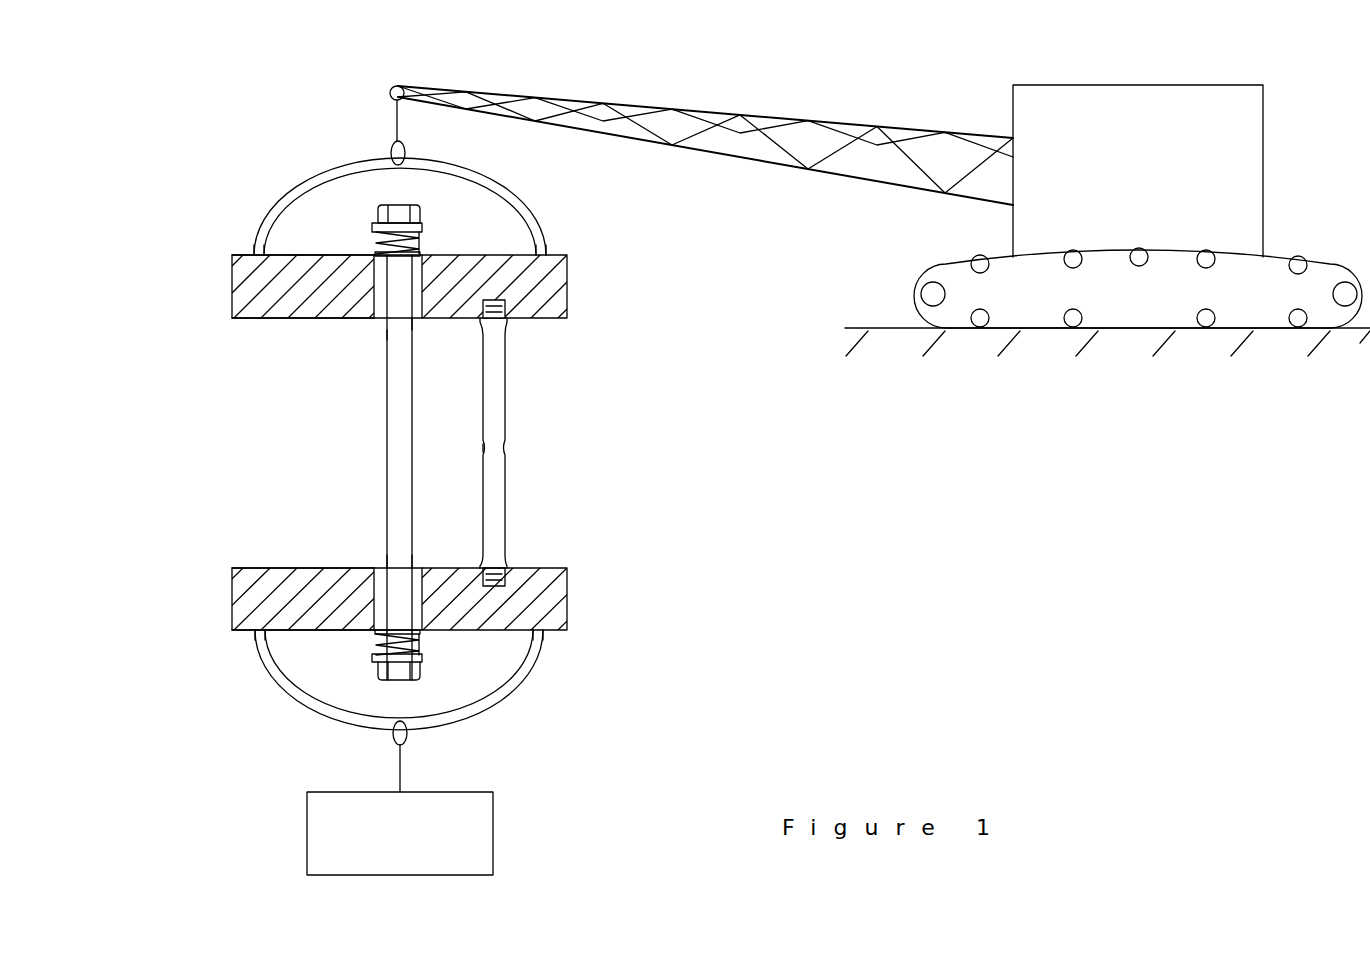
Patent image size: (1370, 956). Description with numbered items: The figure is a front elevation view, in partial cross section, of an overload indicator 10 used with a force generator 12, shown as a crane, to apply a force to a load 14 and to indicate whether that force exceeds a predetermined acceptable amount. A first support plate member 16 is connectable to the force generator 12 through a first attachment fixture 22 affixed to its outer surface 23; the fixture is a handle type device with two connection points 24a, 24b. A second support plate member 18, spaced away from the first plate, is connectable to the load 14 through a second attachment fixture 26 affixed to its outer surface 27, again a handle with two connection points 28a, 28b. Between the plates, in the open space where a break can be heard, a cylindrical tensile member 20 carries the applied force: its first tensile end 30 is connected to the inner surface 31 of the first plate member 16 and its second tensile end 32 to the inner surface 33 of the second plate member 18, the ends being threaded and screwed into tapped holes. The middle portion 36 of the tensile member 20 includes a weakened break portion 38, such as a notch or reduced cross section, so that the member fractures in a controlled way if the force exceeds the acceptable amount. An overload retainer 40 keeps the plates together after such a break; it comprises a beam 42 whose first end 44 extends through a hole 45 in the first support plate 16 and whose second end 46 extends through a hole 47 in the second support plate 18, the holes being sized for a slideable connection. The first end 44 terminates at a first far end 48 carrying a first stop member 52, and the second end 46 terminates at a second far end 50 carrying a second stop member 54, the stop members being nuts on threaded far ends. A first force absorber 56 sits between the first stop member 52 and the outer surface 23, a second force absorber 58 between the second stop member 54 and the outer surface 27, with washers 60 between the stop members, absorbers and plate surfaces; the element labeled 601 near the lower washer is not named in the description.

The overload indicator 10 is at (242, 98).
The force generator 12 is at (1103, 85).
The load 14 is at (493, 838).
The first support plate member 16 is at (226, 283).
The second support plate member 18 is at (226, 590).
The tensile member 20 is at (592, 410).
The first attachment fixture 22 is at (525, 195).
The outer surface 23 is at (240, 255).
The connection point 24a is at (258, 240).
The connection point 24b is at (540, 245).
The second attachment fixture 26 is at (525, 690).
The outer surface 27 is at (236, 632).
The connection point 28a is at (262, 650).
The connection point 28b is at (540, 650).
The first tensile end 30 is at (505, 306).
The inner surface 31 is at (236, 320).
The second tensile end 32 is at (520, 575).
The inner surface 33 is at (240, 568).
The middle portion 36 is at (505, 390).
The break portion 38 is at (505, 447).
The overload retainer 40 is at (296, 446).
The beam 42 is at (407, 420).
The first end 44 is at (403, 330).
The hole 45 is at (420, 320).
The second end 46 is at (403, 565).
The hole 47 is at (420, 568).
The first far end 48 is at (386, 207).
The second far end 50 is at (392, 682).
The first stop member 52 is at (420, 212).
The second stop member 54 is at (422, 672).
The first force absorber 56 is at (420, 240).
The second force absorber 58 is at (420, 647).
The washer 60 is at (375, 657).
The lower spring seat 601 is at (375, 637).